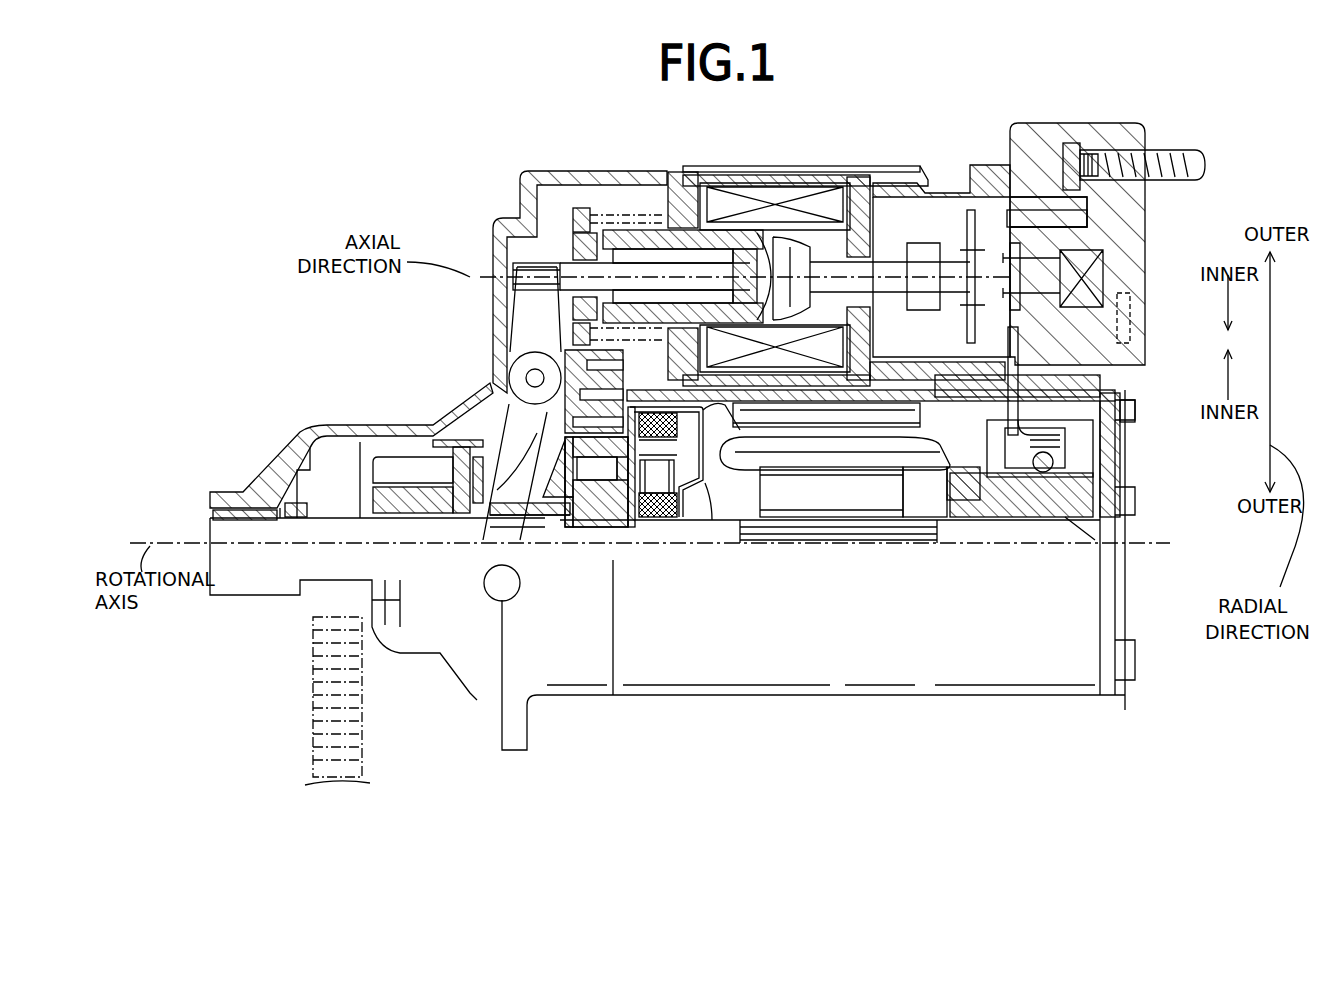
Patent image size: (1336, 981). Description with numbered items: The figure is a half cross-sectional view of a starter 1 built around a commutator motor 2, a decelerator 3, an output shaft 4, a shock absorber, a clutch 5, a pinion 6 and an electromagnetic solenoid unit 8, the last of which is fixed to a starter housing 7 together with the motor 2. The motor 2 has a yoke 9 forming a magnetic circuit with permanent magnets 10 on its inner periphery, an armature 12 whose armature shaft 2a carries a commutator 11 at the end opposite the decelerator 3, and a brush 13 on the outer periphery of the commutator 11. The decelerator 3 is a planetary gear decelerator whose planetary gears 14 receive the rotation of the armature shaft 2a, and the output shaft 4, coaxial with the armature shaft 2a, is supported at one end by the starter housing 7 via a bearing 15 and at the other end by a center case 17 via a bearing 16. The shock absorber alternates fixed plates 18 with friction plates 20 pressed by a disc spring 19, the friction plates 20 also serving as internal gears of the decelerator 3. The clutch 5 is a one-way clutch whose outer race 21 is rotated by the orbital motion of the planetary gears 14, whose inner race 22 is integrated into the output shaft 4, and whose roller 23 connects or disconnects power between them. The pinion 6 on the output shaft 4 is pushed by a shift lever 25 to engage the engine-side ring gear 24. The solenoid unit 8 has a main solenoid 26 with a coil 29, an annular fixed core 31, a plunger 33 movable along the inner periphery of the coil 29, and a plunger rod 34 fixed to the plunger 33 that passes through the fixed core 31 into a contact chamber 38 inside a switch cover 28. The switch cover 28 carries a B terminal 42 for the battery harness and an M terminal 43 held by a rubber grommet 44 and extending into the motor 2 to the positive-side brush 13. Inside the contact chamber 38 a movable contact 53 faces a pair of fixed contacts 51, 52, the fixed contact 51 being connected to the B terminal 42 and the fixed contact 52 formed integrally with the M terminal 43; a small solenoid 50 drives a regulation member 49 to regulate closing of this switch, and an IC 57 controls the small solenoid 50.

The starter 1 is at (392, 182).
The commutator motor 2 is at (957, 700).
The armature shaft 2a is at (960, 640).
The decelerator 3 is at (688, 490).
The output shaft 4 is at (333, 520).
The clutch 5 is at (630, 784).
The pinion 6 is at (405, 465).
The starter housing 7 is at (500, 260).
The electromagnetic solenoid unit 8 is at (880, 163).
The yoke 9 is at (818, 400).
The permanent magnets 10 is at (850, 420).
The commutator 11 is at (1050, 480).
The armature 12 is at (915, 520).
The brush 13 is at (1075, 462).
The planetary gears 14 is at (690, 470).
The bearing 15 is at (240, 515).
The bearing 16 is at (523, 637).
The center case 17 is at (508, 400).
The fixed plates 18 is at (665, 512).
The disc spring 19 is at (705, 470).
The friction plates 20 is at (655, 445).
The outer race 21 is at (625, 455).
The inner race 22 is at (577, 505).
The roller 23 is at (600, 470).
The ring gear 24 is at (313, 643).
The shift lever 25 is at (532, 310).
The main solenoid 26 is at (790, 165).
The switch cover 28 is at (1112, 137).
The coil 29 is at (767, 200).
The fixed core 31 is at (863, 205).
The plunger 33 is at (640, 233).
The plunger rod 34 is at (824, 262).
The contact chamber 38 is at (903, 227).
The B terminal 42 is at (1182, 158).
The M terminal 43 is at (1135, 410).
The grommet 44 is at (1095, 385).
The regulation member 49 is at (1007, 247).
The small solenoid 50 is at (1112, 257).
The fixed contact 51 is at (1023, 205).
The fixed contact 52 is at (1015, 353).
The movable contact 53 is at (968, 222).
The IC 57 is at (1130, 305).